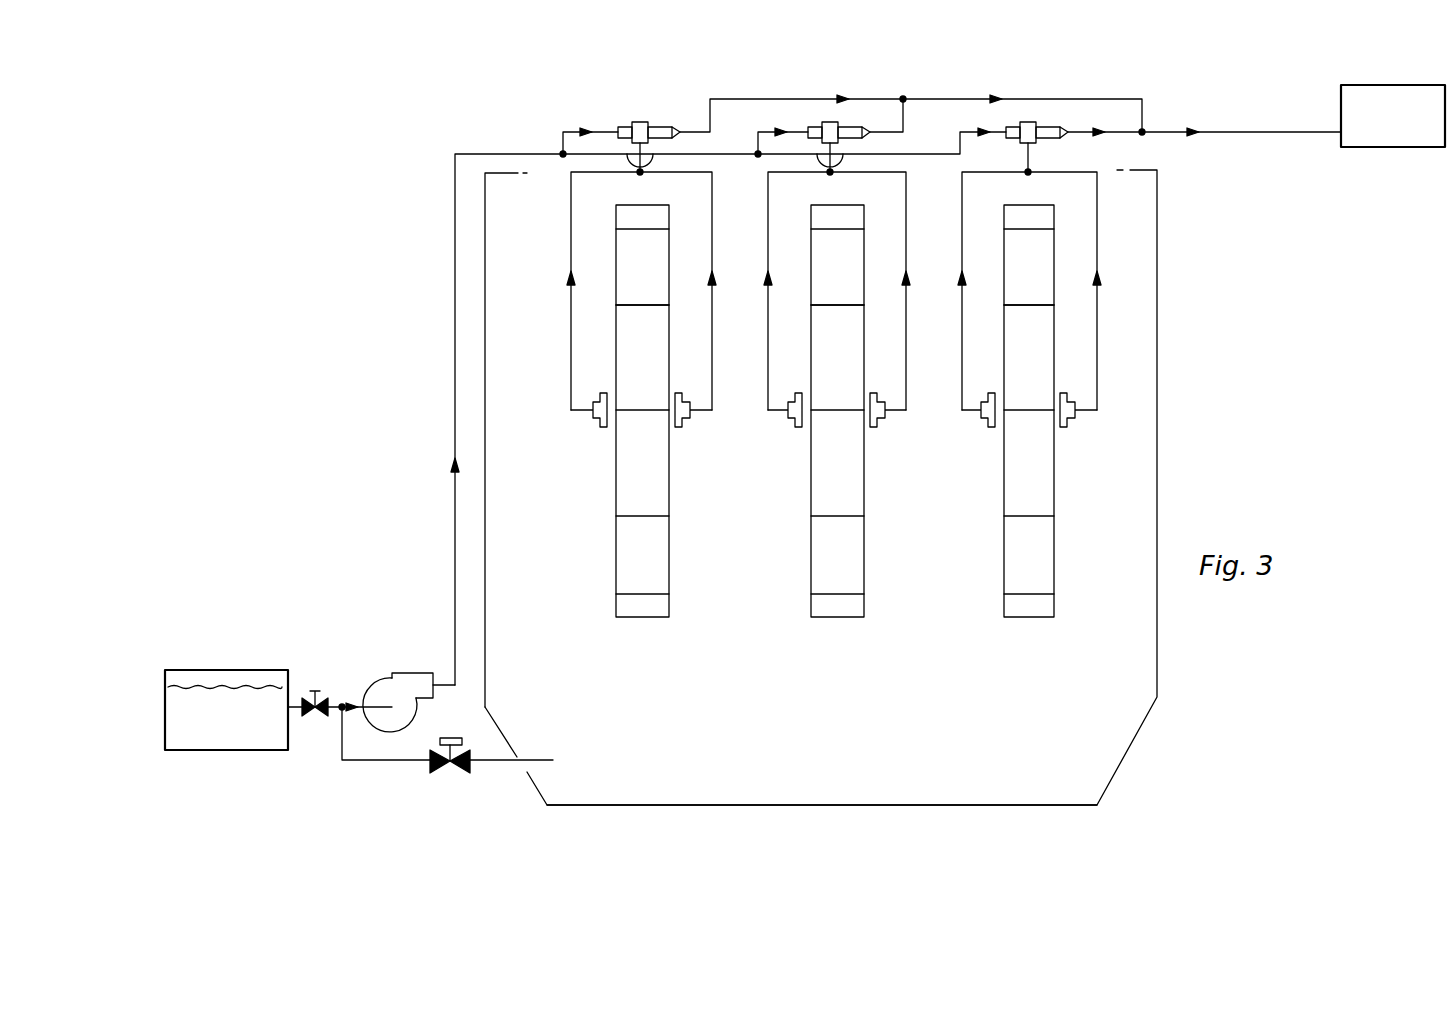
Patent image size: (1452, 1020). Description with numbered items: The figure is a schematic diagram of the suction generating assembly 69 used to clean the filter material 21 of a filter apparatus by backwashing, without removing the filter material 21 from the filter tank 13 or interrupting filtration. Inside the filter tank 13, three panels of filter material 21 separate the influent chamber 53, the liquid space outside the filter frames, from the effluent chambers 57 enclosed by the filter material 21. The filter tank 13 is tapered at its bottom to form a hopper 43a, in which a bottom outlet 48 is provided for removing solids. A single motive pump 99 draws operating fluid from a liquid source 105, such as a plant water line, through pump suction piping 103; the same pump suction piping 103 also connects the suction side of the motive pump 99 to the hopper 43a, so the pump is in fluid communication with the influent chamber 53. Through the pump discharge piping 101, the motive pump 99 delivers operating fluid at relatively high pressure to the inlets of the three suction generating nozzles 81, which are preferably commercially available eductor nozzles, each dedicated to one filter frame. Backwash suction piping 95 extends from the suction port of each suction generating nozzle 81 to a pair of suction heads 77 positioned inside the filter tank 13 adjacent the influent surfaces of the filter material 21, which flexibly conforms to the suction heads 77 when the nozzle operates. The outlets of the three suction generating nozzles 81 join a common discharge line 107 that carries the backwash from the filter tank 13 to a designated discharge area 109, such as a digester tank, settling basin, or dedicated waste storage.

The filter tank 13 is at (1168, 310).
The filter material 21 is at (616, 550).
The hopper 43a is at (853, 795).
The bottom outlet 48 is at (518, 772).
The influent chamber 53 is at (762, 550).
The effluent chamber 57 is at (657, 475).
The suction generating assembly 69 is at (478, 51).
The suction head 77 is at (603, 428).
The suction generating nozzle 81 is at (637, 122).
The backwash suction piping 95 is at (571, 222).
The motive pump 99 is at (400, 683).
The pump discharge piping 101 is at (455, 260).
The pump suction piping 103 is at (342, 705).
The liquid source 105 is at (245, 735).
The common discharge line 107 is at (710, 100).
The discharge area 109 is at (1414, 132).